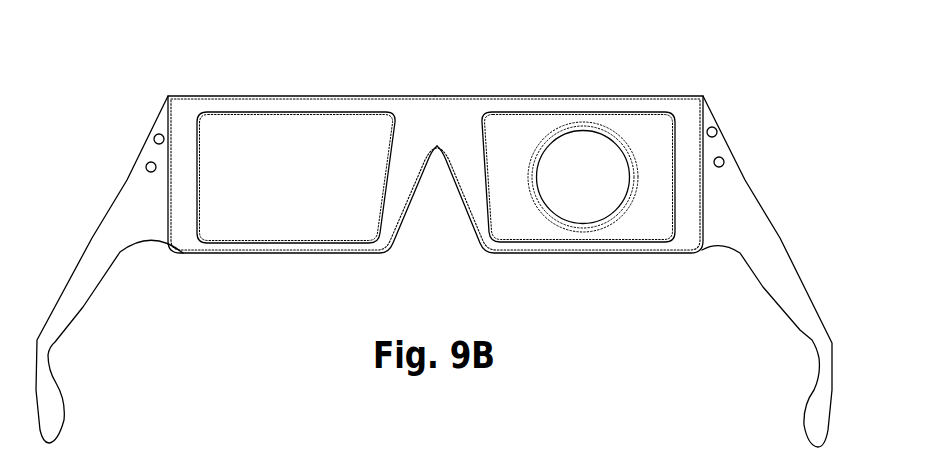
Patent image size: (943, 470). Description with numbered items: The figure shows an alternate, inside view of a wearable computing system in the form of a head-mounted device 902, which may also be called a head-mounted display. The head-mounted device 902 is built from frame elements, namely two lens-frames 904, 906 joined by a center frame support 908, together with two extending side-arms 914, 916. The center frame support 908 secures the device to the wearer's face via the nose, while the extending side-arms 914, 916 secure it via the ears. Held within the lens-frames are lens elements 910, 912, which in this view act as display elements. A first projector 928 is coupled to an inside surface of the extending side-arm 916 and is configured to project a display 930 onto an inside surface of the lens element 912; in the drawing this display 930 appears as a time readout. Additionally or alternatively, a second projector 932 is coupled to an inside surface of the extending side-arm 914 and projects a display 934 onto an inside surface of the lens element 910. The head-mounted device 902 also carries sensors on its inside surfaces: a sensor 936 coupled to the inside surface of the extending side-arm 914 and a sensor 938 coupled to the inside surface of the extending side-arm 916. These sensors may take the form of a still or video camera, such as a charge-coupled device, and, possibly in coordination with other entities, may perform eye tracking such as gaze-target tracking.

The head-mounted device 902 is at (214, 77).
The lens-frame 904 is at (662, 255).
The lens-frame 906 is at (222, 254).
The center frame support 908 is at (434, 96).
The lens element 910 is at (542, 235).
The lens element 912 is at (312, 232).
The extending side-arm 914 is at (758, 200).
The extending side-arm 916 is at (92, 238).
The first projector 928 is at (146, 164).
The display 930 is at (290, 140).
The second projector 932 is at (719, 156).
The display 934 is at (528, 177).
The sensor 936 is at (713, 126).
The sensor 938 is at (153, 137).